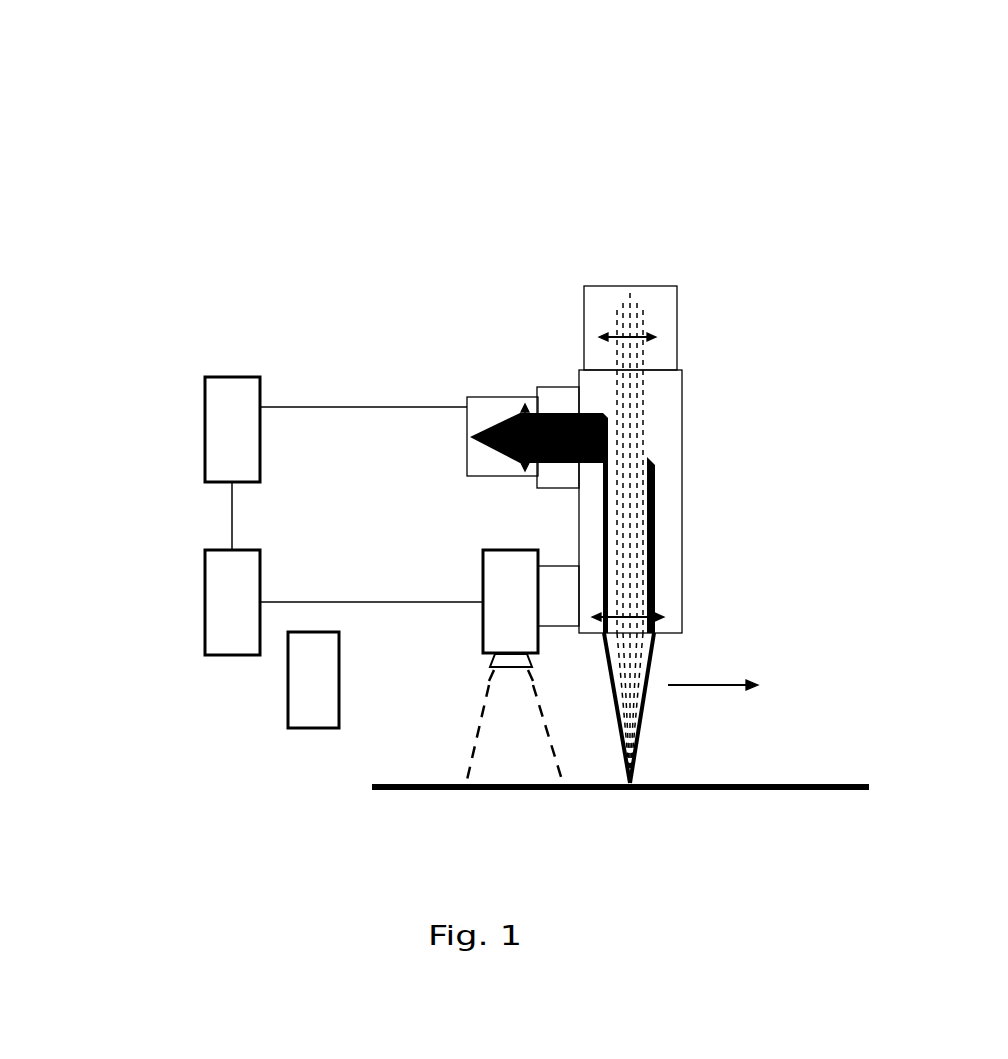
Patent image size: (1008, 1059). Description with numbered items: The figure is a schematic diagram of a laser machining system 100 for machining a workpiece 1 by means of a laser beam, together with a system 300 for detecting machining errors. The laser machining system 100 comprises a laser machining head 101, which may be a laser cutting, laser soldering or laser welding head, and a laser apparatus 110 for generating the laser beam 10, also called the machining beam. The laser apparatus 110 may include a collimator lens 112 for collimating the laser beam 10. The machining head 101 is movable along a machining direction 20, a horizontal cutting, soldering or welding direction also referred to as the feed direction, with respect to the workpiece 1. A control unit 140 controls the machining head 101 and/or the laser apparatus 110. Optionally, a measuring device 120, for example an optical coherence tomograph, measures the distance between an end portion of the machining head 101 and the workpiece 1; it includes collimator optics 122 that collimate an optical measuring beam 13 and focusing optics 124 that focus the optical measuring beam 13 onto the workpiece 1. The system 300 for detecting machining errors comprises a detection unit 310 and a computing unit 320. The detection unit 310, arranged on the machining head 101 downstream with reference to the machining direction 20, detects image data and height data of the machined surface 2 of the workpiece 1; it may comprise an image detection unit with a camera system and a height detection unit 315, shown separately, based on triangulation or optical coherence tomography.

The laser machining system 100 is at (517, 48).
The measuring device 120 is at (596, 275).
The collimator optics 122 is at (656, 337).
The collimator lens 112 is at (520, 401).
The control unit 140 is at (205, 410).
The optical measuring beam 13 is at (632, 430).
The laser machining head 101 is at (682, 503).
The laser apparatus 110 is at (441, 468).
The laser beam 10 is at (603, 523).
The computing unit 320 is at (205, 590).
The focusing optics 124 is at (664, 617).
The detection unit 310 is at (478, 620).
The machined surface 2 is at (428, 783).
The system for detecting machining errors 300 is at (172, 642).
The workpiece 1 is at (816, 785).
The machining direction 20 is at (710, 688).
The height detection unit 315 is at (288, 705).